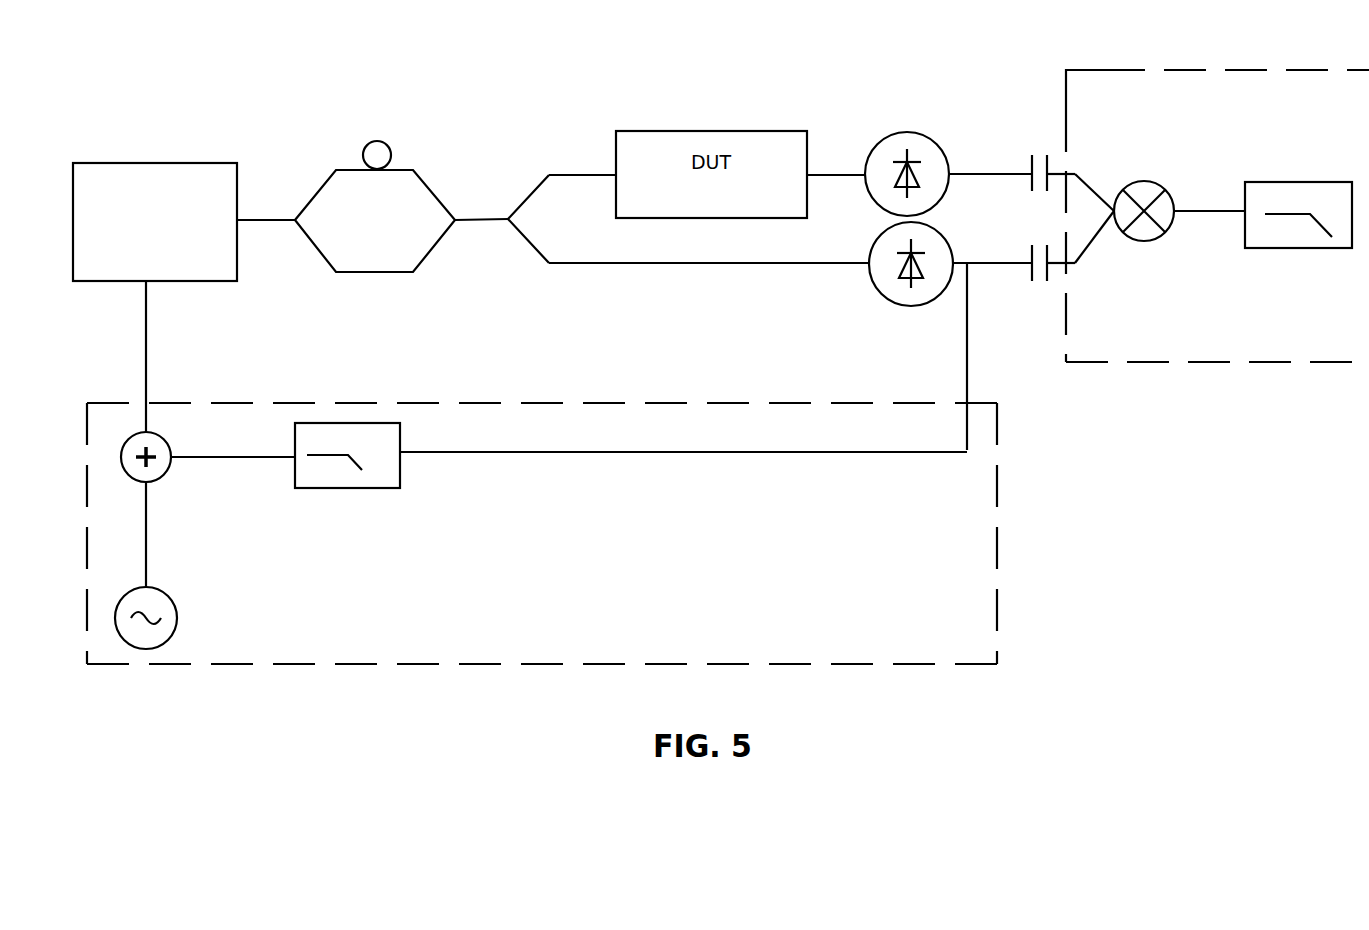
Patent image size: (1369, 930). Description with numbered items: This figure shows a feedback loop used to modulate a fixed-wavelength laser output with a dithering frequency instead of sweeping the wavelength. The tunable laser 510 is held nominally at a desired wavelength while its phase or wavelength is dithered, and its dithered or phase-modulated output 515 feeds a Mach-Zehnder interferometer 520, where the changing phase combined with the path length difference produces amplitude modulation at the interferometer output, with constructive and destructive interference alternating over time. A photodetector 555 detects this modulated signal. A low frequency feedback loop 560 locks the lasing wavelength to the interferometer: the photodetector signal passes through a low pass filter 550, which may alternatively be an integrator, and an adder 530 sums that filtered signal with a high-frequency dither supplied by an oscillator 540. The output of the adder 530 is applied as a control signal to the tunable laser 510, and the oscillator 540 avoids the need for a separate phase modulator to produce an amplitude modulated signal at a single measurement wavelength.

The tunable laser 510 is at (155, 222).
The dithered wavelength output 515 is at (265, 220).
The interferometer 520 is at (375, 206).
The adder 530 is at (207, 432).
The oscillator 540 is at (157, 590).
The low pass filter 550 is at (337, 488).
The photodetector 555 is at (940, 300).
The low frequency feedback loop 560 is at (997, 588).